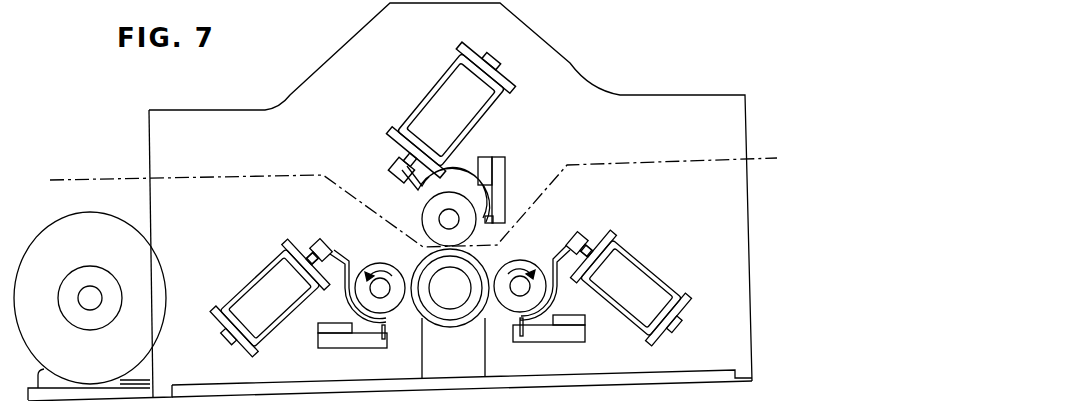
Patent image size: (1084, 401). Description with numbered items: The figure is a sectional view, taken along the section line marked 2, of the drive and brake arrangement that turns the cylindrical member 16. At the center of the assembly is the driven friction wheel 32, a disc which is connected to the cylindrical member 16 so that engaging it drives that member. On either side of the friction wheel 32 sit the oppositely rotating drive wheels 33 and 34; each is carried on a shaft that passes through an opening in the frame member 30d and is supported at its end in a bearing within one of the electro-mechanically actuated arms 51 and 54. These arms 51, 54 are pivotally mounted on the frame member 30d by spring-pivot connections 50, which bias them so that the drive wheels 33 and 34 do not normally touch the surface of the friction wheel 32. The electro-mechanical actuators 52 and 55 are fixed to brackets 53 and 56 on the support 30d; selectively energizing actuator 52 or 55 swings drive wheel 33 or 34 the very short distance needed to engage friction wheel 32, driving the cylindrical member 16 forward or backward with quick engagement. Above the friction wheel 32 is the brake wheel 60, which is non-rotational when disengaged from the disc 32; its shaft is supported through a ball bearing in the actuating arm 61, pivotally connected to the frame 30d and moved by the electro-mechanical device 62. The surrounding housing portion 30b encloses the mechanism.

The section line of FIG. 2 is at (85, 178).
The cylindrical member 16 is at (460, 320).
The housing cover 30b is at (253, 112).
The frame member 30d is at (475, 362).
The friction wheel 32 is at (485, 265).
The drive wheel 33 is at (388, 256).
The drive wheel 34 is at (530, 262).
The spring-pivot connection 50 is at (493, 218).
The electro-mechanically actuated arm 51 is at (342, 253).
The electro-mechanical actuator 52 is at (255, 297).
The bracket 53 is at (237, 287).
The electro-mechanically actuated arm 54 is at (562, 265).
The electro-mechanical actuator 55 is at (638, 287).
The bracket 56 is at (657, 267).
The brake wheel 60 is at (422, 216).
The actuating arm 61 is at (430, 186).
The electro-mechanical device 62 is at (457, 119).